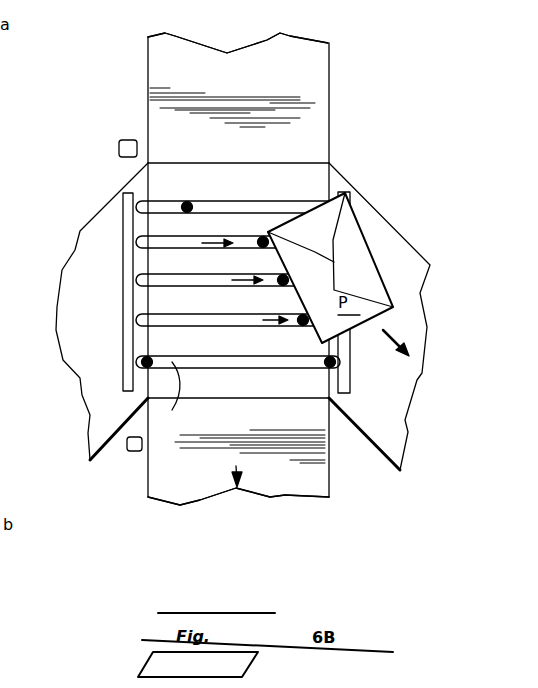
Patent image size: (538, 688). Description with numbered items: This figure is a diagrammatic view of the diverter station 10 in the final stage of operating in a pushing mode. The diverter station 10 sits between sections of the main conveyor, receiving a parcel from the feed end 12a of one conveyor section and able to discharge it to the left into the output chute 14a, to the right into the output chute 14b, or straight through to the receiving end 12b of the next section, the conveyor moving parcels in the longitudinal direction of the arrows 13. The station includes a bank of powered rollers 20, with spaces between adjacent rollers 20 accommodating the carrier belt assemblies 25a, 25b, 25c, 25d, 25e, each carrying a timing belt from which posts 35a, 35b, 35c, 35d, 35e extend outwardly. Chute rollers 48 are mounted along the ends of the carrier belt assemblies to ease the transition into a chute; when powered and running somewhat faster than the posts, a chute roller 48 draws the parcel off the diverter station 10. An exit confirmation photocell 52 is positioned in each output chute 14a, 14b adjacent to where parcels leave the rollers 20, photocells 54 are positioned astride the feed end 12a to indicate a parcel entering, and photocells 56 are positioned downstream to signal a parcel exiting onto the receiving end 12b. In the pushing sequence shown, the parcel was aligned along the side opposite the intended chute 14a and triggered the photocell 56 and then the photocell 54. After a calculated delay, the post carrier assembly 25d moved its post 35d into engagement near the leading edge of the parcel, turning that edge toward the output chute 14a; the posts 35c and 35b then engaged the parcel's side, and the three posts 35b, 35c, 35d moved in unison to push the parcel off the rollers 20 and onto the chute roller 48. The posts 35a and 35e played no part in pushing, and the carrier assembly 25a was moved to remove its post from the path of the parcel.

The diverter station 10 is at (390, 173).
The feed end 12a is at (317, 77).
The receiving end 12b is at (318, 484).
The arrows 13 is at (236, 464).
The output chute 14a is at (80, 231).
The output chute 14b is at (96, 458).
The powered rollers 20 is at (173, 177).
The carrier belt assembly 25a is at (268, 148).
The carrier belt assembly 25b is at (132, 262).
The carrier belt assembly 25c is at (133, 315).
The post carrier assembly 25d is at (135, 345).
The carrier belt assembly 25e is at (172, 362).
The post 35a is at (183, 203).
The post 35b is at (263, 250).
The post 35c is at (285, 290).
The post 35d is at (305, 328).
The post 35e is at (328, 370).
The chute rollers 48 is at (128, 213).
The exit confirmation photocell 52 is at (0, 325).
The photocells 54 is at (125, 140).
The photocells 56 is at (131, 452).